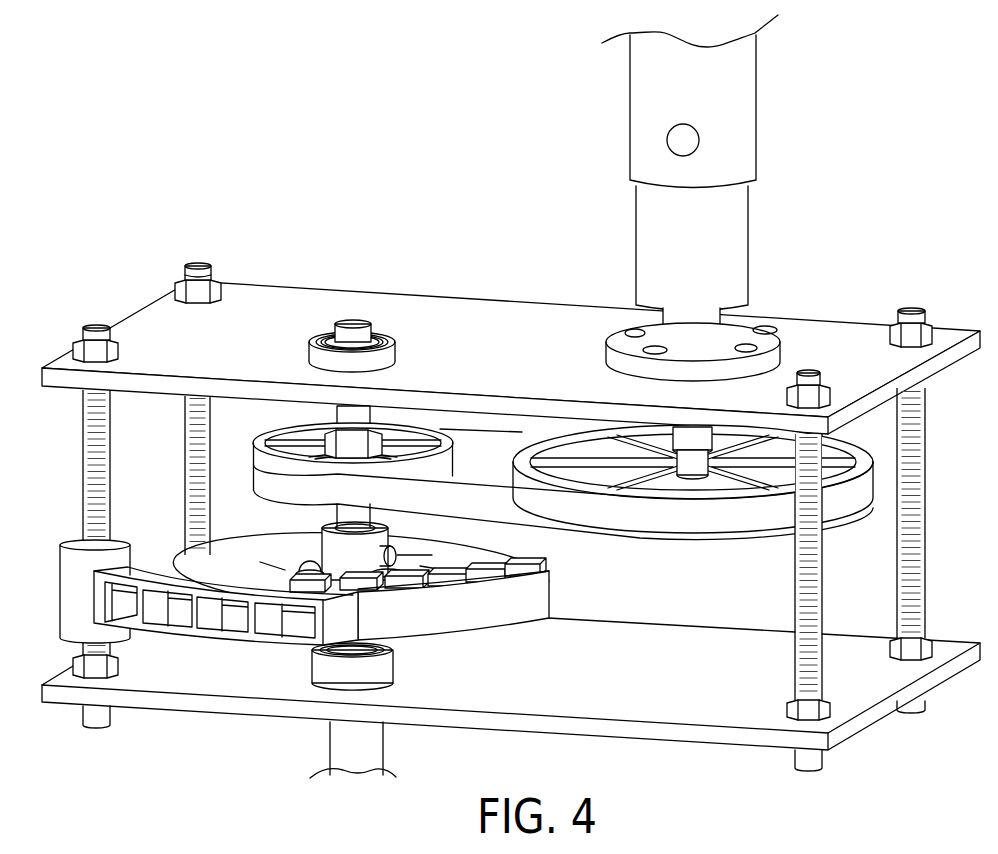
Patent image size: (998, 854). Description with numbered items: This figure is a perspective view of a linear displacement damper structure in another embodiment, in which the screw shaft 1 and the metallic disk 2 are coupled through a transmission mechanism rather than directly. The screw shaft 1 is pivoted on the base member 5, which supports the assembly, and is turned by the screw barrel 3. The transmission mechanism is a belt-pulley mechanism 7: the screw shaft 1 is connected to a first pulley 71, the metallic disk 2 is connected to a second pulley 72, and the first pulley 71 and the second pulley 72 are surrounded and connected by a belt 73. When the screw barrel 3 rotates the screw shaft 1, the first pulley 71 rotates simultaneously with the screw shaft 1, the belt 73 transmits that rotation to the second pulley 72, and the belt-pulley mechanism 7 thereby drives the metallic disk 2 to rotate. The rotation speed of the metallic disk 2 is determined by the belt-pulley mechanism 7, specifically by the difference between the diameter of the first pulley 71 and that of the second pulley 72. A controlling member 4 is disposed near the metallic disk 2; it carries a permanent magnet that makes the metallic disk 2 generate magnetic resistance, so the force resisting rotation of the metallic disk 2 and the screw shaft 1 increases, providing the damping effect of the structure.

The screw shaft 1 is at (770, 323).
The metallic disk 2 is at (196, 565).
The screw barrel 3 is at (752, 136).
The controller 4 is at (475, 616).
The base member 5 is at (78, 301).
The belt-pulley mechanism 7 is at (563, 343).
The first pulley 71 is at (556, 440).
The second pulley 72 is at (405, 428).
The belt 73 is at (470, 462).